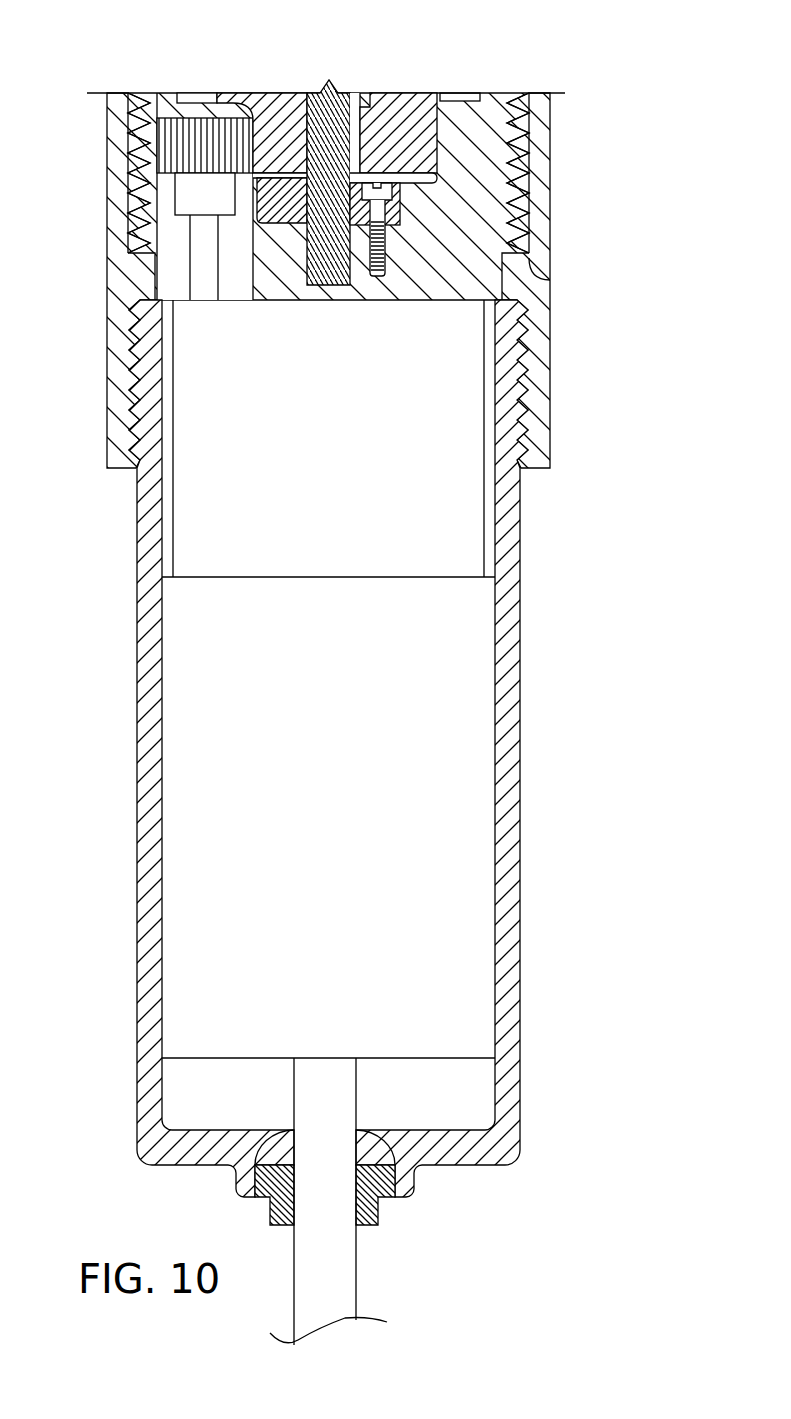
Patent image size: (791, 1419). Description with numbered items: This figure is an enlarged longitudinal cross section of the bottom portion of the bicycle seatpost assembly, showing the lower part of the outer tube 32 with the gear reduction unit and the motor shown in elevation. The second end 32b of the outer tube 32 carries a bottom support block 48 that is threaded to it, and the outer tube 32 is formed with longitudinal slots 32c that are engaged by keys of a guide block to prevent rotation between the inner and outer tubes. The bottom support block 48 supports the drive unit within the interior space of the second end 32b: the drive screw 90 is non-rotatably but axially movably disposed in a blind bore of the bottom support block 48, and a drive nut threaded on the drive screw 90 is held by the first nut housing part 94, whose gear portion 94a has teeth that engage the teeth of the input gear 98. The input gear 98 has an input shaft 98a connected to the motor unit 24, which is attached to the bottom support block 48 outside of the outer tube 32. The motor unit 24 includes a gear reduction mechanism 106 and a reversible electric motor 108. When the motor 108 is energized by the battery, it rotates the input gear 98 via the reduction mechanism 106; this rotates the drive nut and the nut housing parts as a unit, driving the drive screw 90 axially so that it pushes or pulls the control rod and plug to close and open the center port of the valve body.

The motor unit 24 is at (535, 749).
The outer tube 32 is at (105, 117).
The second end of the outer tube 32b is at (536, 262).
The longitudinal slots 32c is at (153, 101).
The bottom support block 48 is at (473, 203).
The drive screw 90 is at (330, 258).
The first nut housing part 94 is at (268, 122).
The gear portion 94a is at (388, 150).
The input gear 98 is at (185, 147).
The input shaft 98a is at (202, 270).
The gear reduction mechanism 106 is at (422, 519).
The reversible electric motor 108 is at (250, 905).